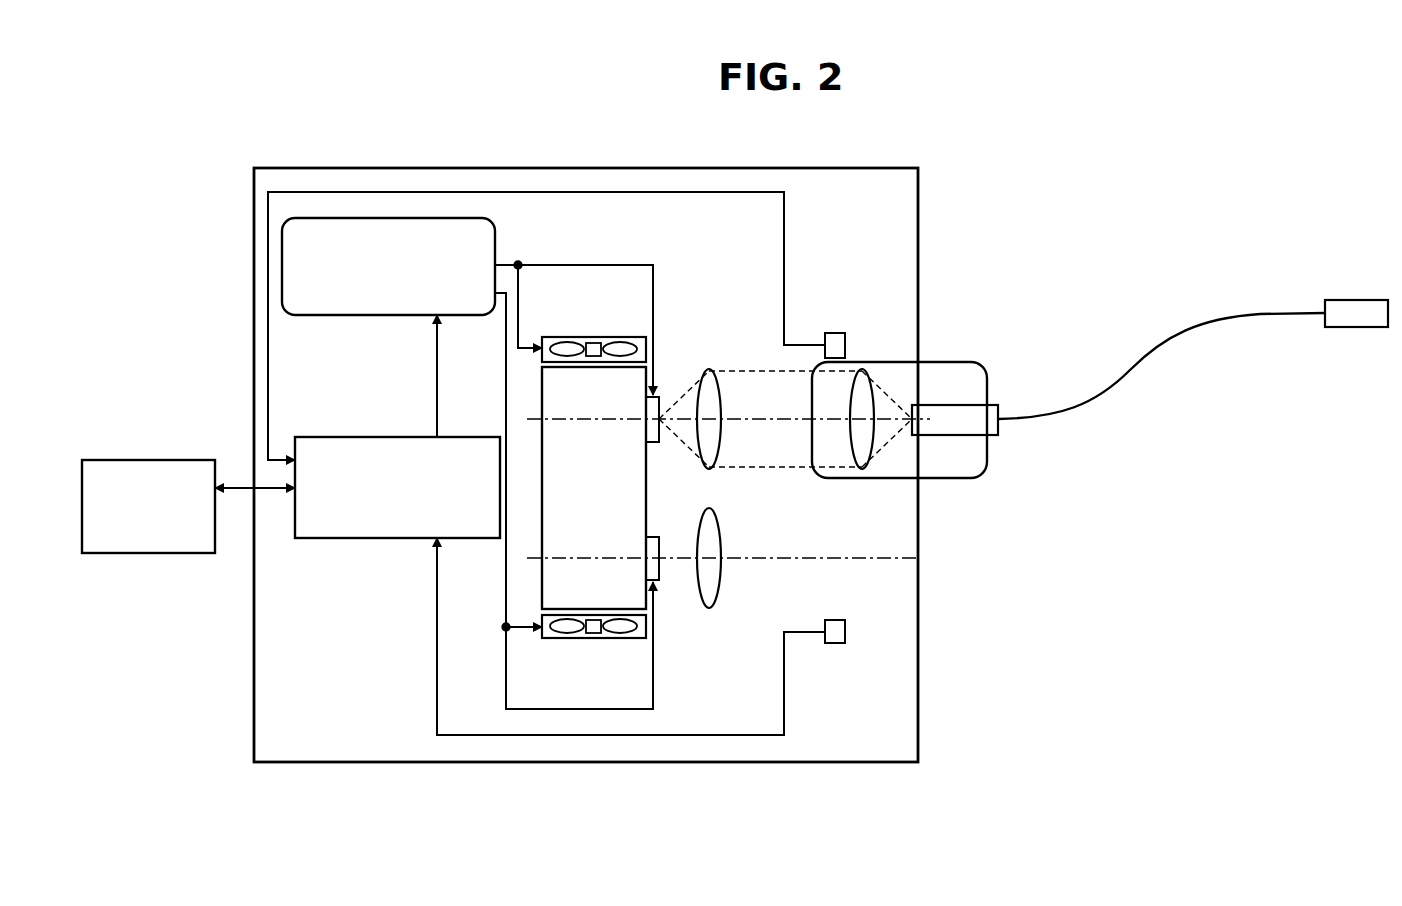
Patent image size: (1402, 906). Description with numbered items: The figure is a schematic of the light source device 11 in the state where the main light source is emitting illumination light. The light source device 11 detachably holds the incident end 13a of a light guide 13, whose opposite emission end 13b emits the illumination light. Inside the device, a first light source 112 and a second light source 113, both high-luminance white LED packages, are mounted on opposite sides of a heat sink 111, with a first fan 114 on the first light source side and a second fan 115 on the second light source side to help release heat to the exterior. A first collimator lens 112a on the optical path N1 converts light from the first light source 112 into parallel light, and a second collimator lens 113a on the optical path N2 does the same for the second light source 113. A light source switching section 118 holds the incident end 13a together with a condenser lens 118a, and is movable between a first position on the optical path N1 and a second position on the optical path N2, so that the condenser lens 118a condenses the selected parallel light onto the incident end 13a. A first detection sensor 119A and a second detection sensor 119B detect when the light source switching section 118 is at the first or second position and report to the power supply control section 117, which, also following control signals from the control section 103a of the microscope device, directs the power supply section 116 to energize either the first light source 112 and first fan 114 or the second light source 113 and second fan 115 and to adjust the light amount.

The light source device 11 is at (885, 168).
The light guide 13 is at (1188, 335).
The incident end 13a is at (997, 405).
The emission end 13b is at (1352, 300).
The control section 103a is at (150, 460).
The heat sink 111 is at (646, 487).
The first light source 112 is at (661, 396).
The first collimator lens 112a is at (708, 368).
The second light source 113 is at (662, 572).
The second collimator lens 113a is at (715, 509).
The first fan 114 is at (574, 337).
The second fan 115 is at (570, 640).
The power supply section 116 is at (497, 238).
The power supply control section 117 is at (308, 437).
The light source switching section 118 is at (955, 362).
The condenser lens 118a is at (862, 364).
The first detection sensor 119A is at (832, 333).
The second detection sensor 119B is at (836, 645).
The optical path N1 is at (745, 428).
The optical path N2 is at (824, 553).